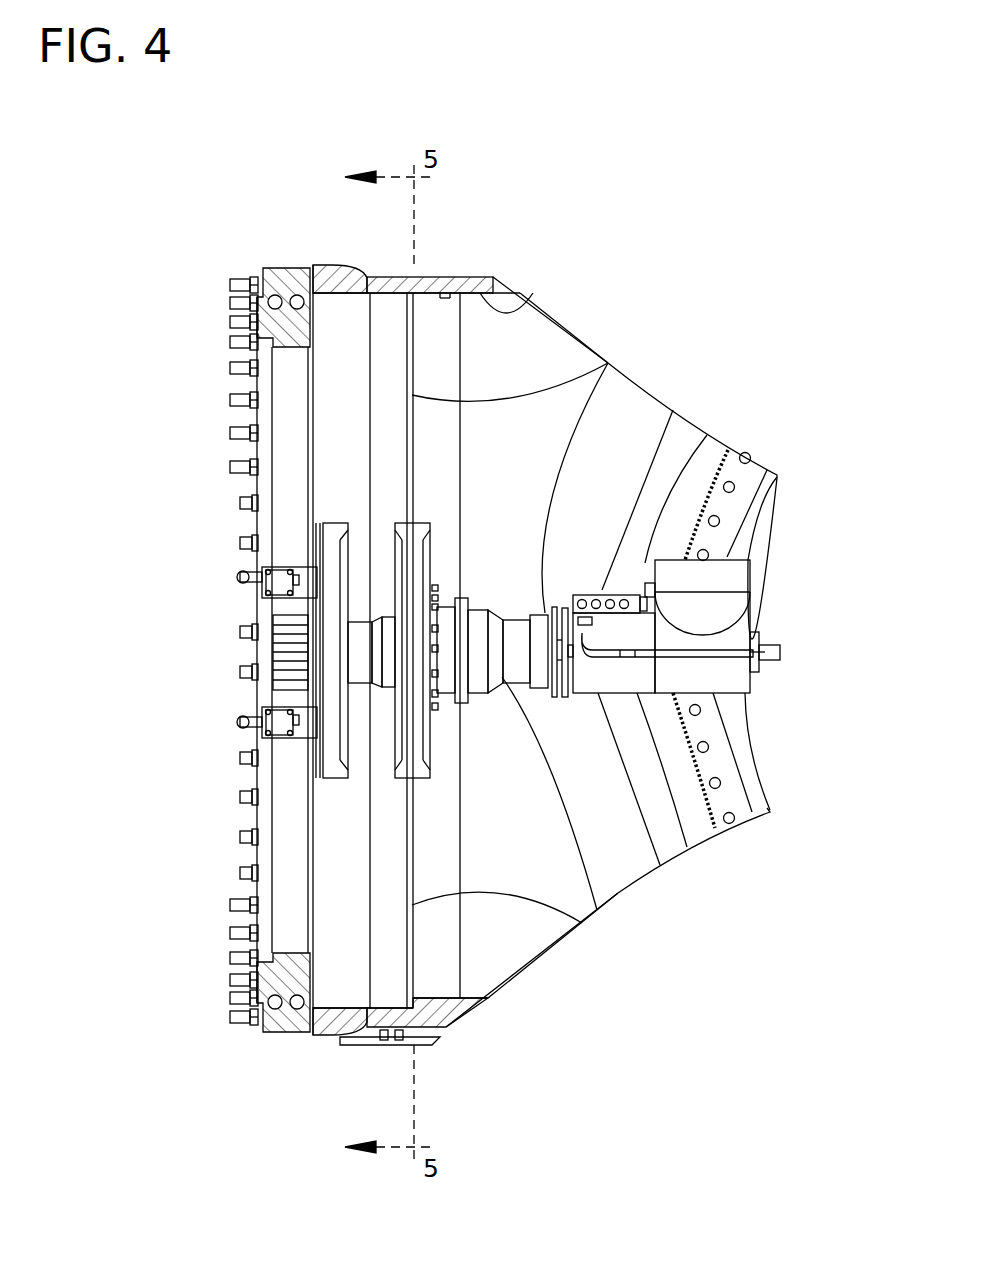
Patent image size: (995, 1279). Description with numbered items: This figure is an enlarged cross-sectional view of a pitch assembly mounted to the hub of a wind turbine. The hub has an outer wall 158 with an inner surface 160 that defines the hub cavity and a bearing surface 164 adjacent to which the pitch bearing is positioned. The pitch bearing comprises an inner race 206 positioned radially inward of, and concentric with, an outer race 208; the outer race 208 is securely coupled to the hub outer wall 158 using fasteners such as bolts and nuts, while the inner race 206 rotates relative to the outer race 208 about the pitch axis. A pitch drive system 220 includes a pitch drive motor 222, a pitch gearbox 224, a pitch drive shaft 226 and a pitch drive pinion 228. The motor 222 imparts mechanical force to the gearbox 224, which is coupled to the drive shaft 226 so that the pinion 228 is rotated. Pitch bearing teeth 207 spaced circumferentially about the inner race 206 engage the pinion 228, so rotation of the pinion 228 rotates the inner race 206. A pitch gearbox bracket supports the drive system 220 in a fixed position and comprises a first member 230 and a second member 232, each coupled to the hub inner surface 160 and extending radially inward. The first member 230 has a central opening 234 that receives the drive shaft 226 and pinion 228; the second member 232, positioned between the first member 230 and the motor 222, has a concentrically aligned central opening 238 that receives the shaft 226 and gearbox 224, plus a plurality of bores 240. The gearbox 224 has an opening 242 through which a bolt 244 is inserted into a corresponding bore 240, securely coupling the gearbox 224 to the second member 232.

The hub outer wall 158 is at (465, 277).
The hub inner surface 160 is at (533, 293).
The bearing surface 164 is at (300, 278).
The inner race 206 is at (262, 998).
The pitch bearing teeth 207 is at (295, 400).
The outer race 208 is at (257, 277).
The pitch drive system 220 is at (775, 553).
The pitch drive motor 222 is at (733, 575).
The pitch gearbox 224 is at (632, 883).
The pitch drive shaft 226 is at (382, 712).
The pitch drive pinion 228 is at (280, 628).
The first member 230 is at (335, 522).
The second member 232 is at (428, 782).
The central opening 234 is at (332, 550).
The central opening 238 is at (462, 605).
The bores 240 is at (432, 755).
The opening 242 is at (440, 590).
The bolt 244 is at (448, 712).